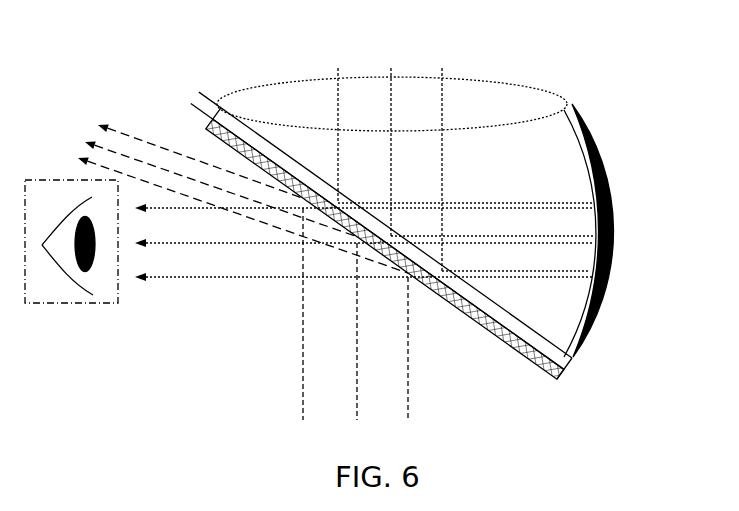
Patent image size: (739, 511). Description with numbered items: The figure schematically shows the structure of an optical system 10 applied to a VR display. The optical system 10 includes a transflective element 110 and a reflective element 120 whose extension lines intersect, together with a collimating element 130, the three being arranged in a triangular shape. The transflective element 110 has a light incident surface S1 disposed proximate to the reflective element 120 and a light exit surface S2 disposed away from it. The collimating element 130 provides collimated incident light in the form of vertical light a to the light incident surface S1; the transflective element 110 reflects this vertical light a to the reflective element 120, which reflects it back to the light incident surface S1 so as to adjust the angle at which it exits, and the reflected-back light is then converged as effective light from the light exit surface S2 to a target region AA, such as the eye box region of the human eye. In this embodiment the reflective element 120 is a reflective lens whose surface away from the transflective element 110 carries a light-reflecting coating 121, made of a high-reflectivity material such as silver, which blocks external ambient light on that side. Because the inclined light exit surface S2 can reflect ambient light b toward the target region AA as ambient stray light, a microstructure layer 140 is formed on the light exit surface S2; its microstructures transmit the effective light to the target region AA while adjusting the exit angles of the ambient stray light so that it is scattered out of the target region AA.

The optical system 10 is at (88, 34).
The transflective element 110 is at (421, 235).
The reflective element 120 is at (596, 186).
The light-reflecting coating 121 is at (613, 228).
The collimating element 130 is at (545, 91).
The microstructure layer 140 is at (518, 350).
The target region AA is at (63, 304).
The light incident surface S1 is at (380, 222).
The light exit surface S2 is at (368, 234).
The vertical light a is at (397, 169).
The ambient light b is at (346, 314).